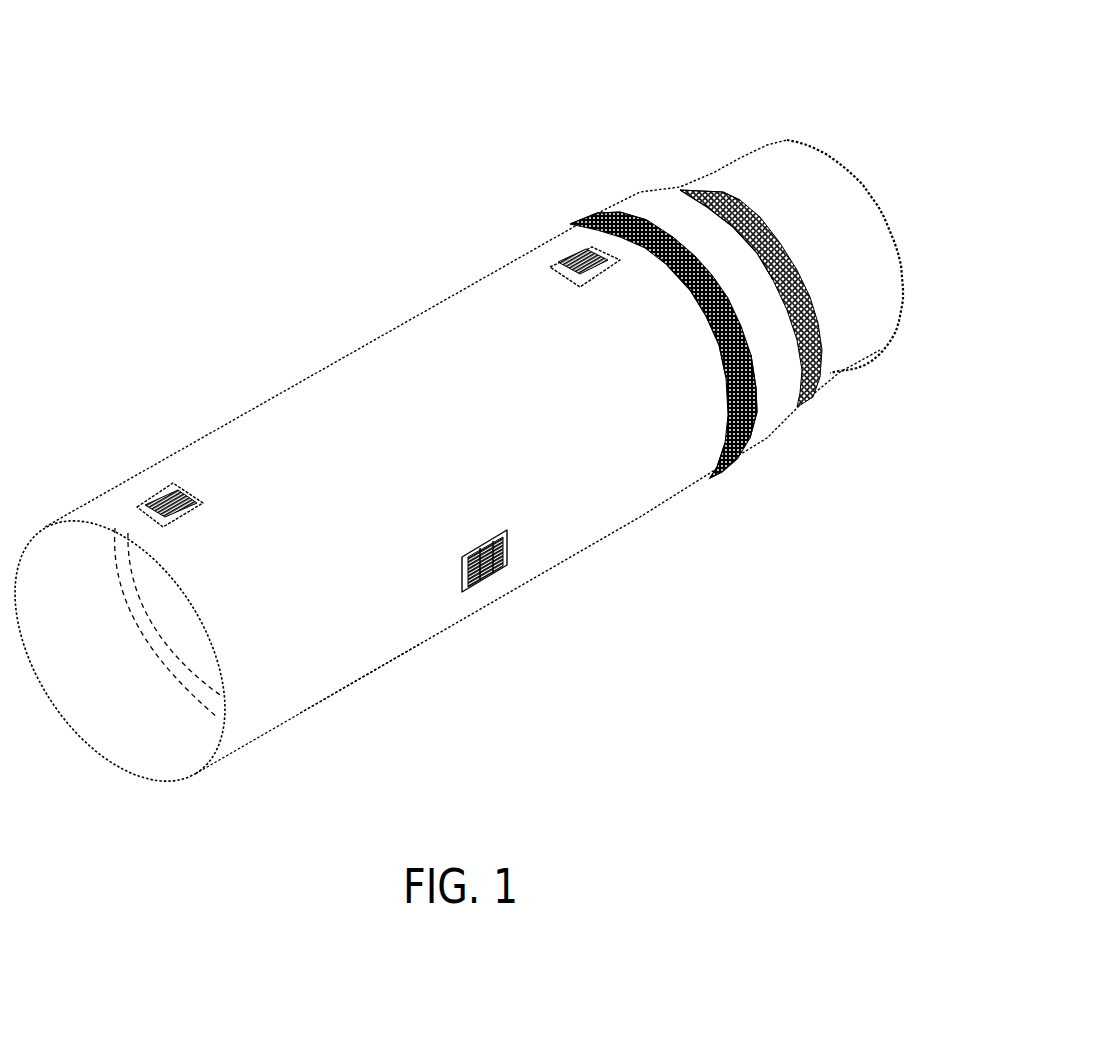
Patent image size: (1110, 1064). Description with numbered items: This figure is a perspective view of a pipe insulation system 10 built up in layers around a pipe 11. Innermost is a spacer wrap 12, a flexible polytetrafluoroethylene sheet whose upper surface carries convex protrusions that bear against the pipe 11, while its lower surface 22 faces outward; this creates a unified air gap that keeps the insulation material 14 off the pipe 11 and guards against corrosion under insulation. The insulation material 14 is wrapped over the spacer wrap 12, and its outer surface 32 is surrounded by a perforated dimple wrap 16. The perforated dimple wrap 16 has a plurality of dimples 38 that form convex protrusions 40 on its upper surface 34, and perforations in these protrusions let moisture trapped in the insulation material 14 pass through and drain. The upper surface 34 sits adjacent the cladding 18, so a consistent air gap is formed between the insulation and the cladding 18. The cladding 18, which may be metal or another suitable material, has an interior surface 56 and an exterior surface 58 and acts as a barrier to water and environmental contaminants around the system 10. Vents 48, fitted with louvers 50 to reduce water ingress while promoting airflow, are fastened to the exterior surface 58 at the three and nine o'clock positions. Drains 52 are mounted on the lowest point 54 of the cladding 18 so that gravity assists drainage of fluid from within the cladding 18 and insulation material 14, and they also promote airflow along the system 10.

The pipe insulation system 10 is at (128, 163).
The pipe 11 is at (860, 200).
The spacer wrap 12 is at (697, 190).
The insulation material 14 is at (782, 400).
The perforated dimple wrap 16 is at (727, 465).
The cladding 18 is at (285, 430).
The lower surface 22 is at (735, 205).
The outer surface 32 is at (660, 208).
The upper surface 34 is at (600, 217).
The dimples 38 is at (745, 405).
The convex protrusions 40 is at (720, 357).
The vents 48 is at (142, 507).
The louvers 50 is at (177, 490).
The drains 52 is at (498, 572).
The lowest point 54 is at (428, 590).
The interior surface 56 is at (162, 777).
The exterior surface 58 is at (380, 628).